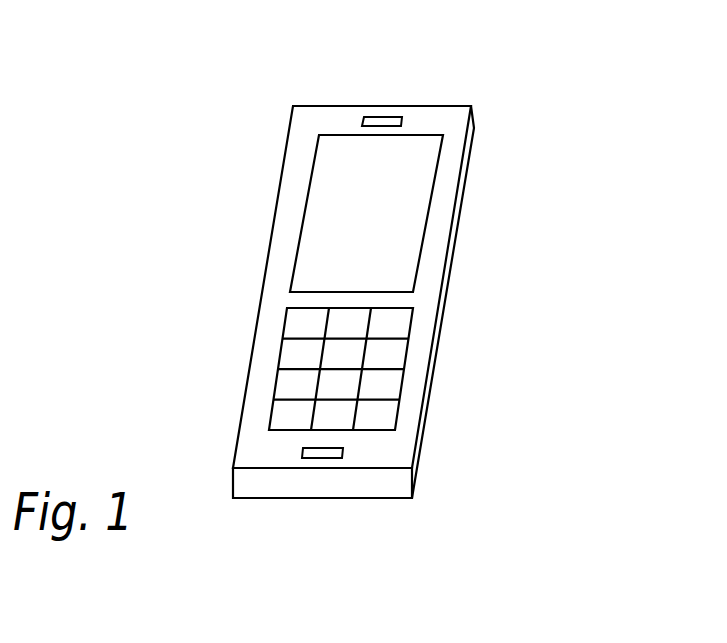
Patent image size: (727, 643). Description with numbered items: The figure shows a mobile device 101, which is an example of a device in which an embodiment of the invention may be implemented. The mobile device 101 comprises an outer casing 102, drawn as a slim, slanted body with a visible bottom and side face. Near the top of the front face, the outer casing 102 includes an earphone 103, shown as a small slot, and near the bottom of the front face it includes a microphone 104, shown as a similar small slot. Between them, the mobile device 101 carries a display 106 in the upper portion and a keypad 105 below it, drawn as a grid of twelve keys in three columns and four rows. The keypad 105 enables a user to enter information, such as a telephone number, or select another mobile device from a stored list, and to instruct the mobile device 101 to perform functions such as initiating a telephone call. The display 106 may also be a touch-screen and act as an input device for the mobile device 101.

The mobile device 101 is at (240, 157).
The outer casing 102 is at (258, 312).
The earphone 103 is at (390, 117).
The microphone 104 is at (333, 458).
The keypad 105 is at (407, 353).
The display 106 is at (433, 202).